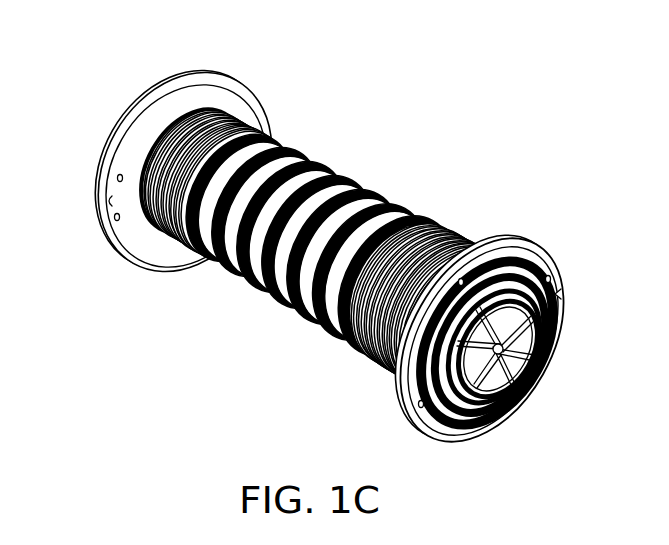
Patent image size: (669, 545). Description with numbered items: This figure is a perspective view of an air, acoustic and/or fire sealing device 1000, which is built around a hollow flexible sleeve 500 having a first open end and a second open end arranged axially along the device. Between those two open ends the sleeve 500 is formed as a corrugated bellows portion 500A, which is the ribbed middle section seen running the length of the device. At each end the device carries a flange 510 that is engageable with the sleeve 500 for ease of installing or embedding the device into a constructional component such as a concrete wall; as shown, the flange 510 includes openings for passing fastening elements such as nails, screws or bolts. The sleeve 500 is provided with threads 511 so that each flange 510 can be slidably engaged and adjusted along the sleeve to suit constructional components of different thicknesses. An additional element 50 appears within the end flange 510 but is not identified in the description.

The air, acoustic and/or fire sealing device 1000 is at (326, 255).
The hollow flexible sleeve 500 is at (324, 255).
The bellows portion 500A is at (338, 186).
The threads 511 is at (345, 264).
The flange 510 is at (496, 348).
The hub with spokes 50 is at (532, 366).